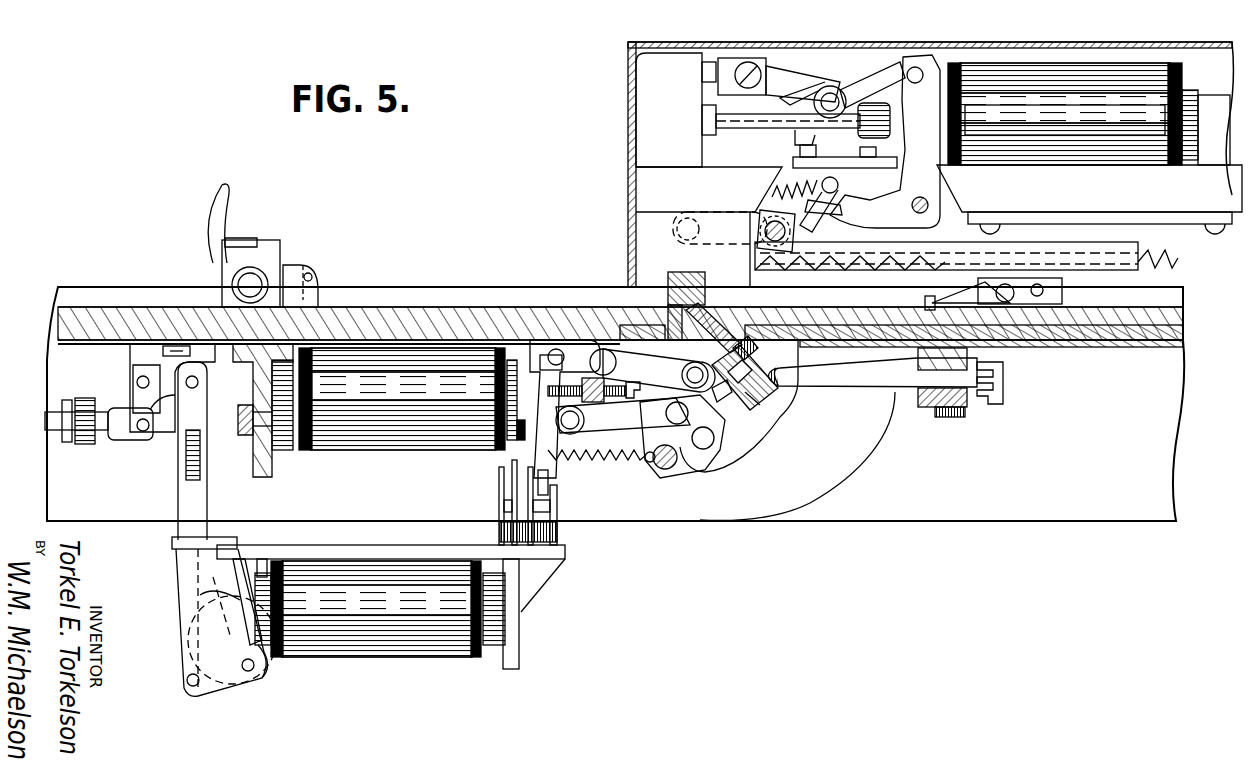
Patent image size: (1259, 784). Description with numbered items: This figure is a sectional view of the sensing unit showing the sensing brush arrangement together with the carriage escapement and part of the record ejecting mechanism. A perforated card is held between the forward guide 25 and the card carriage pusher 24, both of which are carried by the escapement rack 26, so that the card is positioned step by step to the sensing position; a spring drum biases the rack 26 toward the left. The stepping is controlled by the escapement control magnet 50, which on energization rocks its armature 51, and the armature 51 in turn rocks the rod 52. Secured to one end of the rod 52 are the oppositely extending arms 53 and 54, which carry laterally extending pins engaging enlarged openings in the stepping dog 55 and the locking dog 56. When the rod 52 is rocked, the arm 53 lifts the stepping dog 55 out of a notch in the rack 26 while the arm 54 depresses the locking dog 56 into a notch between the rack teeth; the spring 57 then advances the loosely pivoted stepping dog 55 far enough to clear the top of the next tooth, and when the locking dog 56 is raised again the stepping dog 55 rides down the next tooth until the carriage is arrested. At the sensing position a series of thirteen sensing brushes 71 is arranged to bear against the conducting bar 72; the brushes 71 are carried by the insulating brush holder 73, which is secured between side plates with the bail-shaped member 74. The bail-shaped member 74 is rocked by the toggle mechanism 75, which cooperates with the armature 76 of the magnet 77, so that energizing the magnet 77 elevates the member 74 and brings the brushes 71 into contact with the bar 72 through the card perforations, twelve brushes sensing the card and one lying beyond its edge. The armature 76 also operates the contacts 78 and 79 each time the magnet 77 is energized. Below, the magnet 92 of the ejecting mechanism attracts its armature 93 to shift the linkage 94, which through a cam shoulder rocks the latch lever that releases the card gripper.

The card carriage pusher 24 is at (992, 302).
The forward guide 25 is at (297, 273).
The escapement rack 26 is at (1168, 270).
The escapement control magnet 50 is at (1073, 90).
The armature 51 is at (960, 126).
The rod 52 is at (762, 214).
The arm 53 is at (836, 196).
The arm 54 is at (745, 232).
The stepping dog 55 is at (855, 228).
The locking dog 56 is at (760, 238).
The spring 57 is at (802, 275).
The sensing brushes 71 is at (735, 312).
The conducting bar 72 is at (685, 272).
The insulating brush holder 73 is at (777, 393).
The bail-shaped member 74 is at (725, 416).
The toggle mechanism 75 is at (652, 385).
The armature 76 is at (540, 405).
The magnet 77 is at (372, 415).
The contacts 78 is at (540, 498).
The contacts 79 is at (499, 500).
The magnet 92 is at (368, 618).
The armature 93 is at (268, 658).
The linkage 94 is at (190, 452).